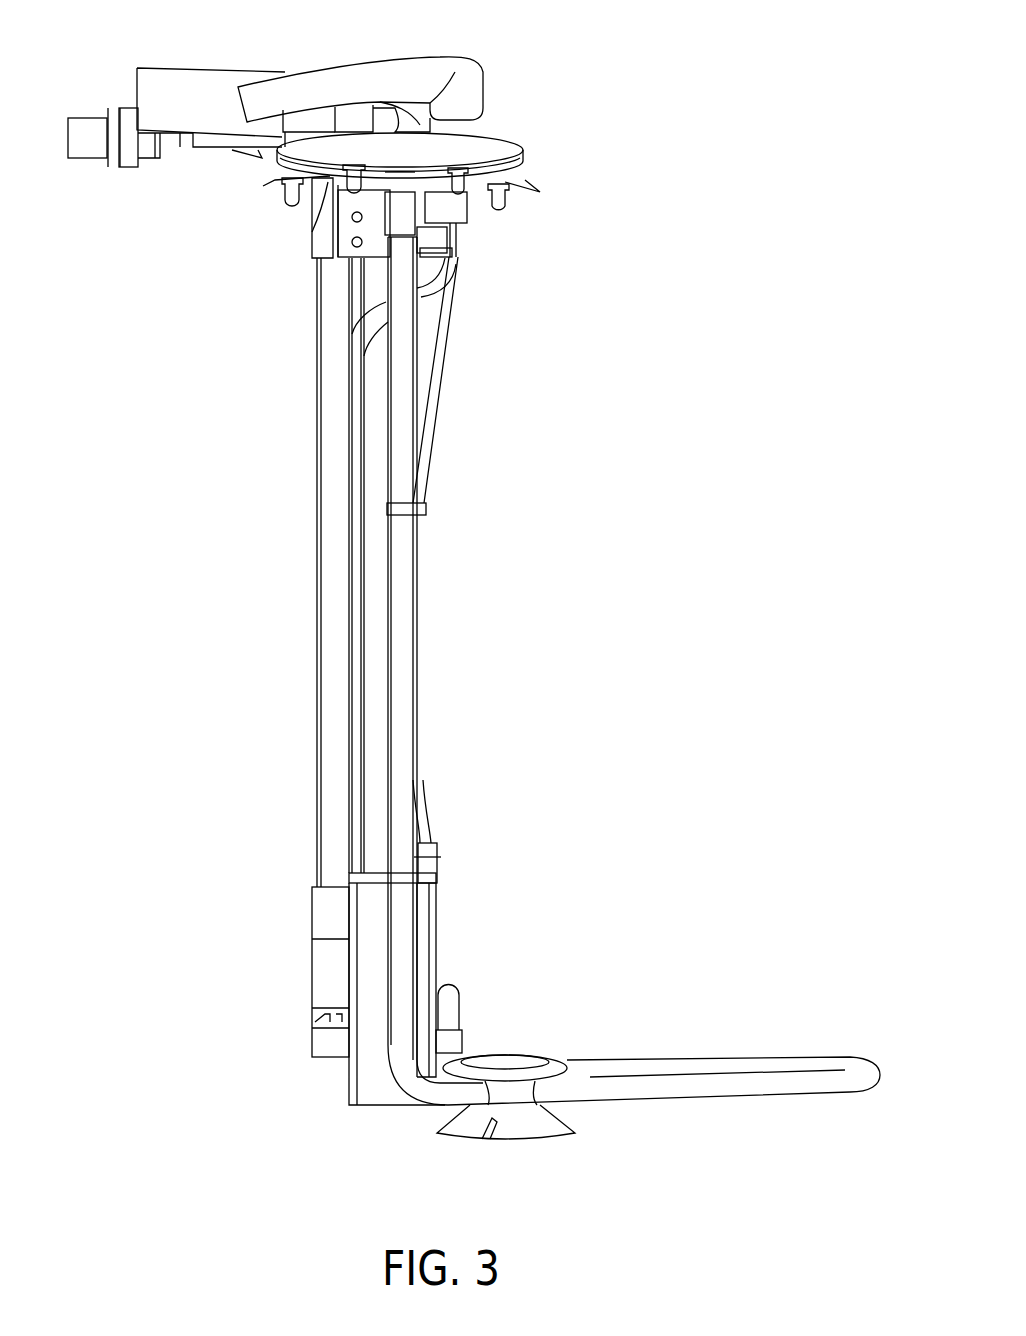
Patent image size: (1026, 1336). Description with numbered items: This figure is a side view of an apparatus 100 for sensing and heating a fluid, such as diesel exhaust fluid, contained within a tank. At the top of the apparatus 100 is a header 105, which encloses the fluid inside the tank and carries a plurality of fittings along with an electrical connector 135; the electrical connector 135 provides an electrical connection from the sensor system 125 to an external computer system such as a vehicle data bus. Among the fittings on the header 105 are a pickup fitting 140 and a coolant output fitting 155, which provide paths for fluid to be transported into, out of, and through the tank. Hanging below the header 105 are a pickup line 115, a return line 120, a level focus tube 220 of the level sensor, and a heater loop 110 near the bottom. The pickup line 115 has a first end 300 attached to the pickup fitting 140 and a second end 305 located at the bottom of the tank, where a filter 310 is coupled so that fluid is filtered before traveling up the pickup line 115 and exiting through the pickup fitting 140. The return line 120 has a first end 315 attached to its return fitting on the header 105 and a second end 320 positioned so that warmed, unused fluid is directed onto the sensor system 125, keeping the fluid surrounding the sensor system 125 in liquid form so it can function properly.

The apparatus 100 is at (648, 68).
The header 105 is at (541, 171).
The heater loop 110 is at (752, 1087).
The pickup line 115 is at (433, 427).
The return line 120 is at (423, 296).
The sensor system 125 is at (271, 848).
The electrical connector 135 is at (75, 117).
The pickup fitting 140 is at (468, 212).
The coolant output fitting 155 is at (385, 62).
The level focus tube 220 is at (317, 484).
The first end 300 is at (470, 234).
The second end 305 is at (434, 843).
The filter 310 is at (371, 1093).
The first end 315 is at (447, 260).
The second end 320 is at (352, 344).